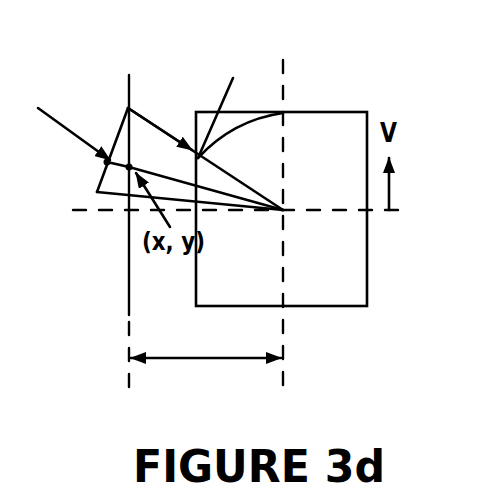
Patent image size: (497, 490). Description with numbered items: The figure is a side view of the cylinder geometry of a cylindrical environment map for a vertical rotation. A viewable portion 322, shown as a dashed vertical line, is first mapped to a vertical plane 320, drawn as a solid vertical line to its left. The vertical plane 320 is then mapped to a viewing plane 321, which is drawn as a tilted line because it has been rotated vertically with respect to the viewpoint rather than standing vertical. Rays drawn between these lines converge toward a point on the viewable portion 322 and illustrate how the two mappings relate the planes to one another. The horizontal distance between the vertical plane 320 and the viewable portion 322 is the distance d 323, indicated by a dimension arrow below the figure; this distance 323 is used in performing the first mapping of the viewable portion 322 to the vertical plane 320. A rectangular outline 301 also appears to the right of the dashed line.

The vertical plane 320 is at (133, 82).
The viewing plane 321 is at (126, 112).
The viewable portion 322 is at (283, 113).
The detector box 301 is at (367, 296).
The distance d 323 is at (217, 363).